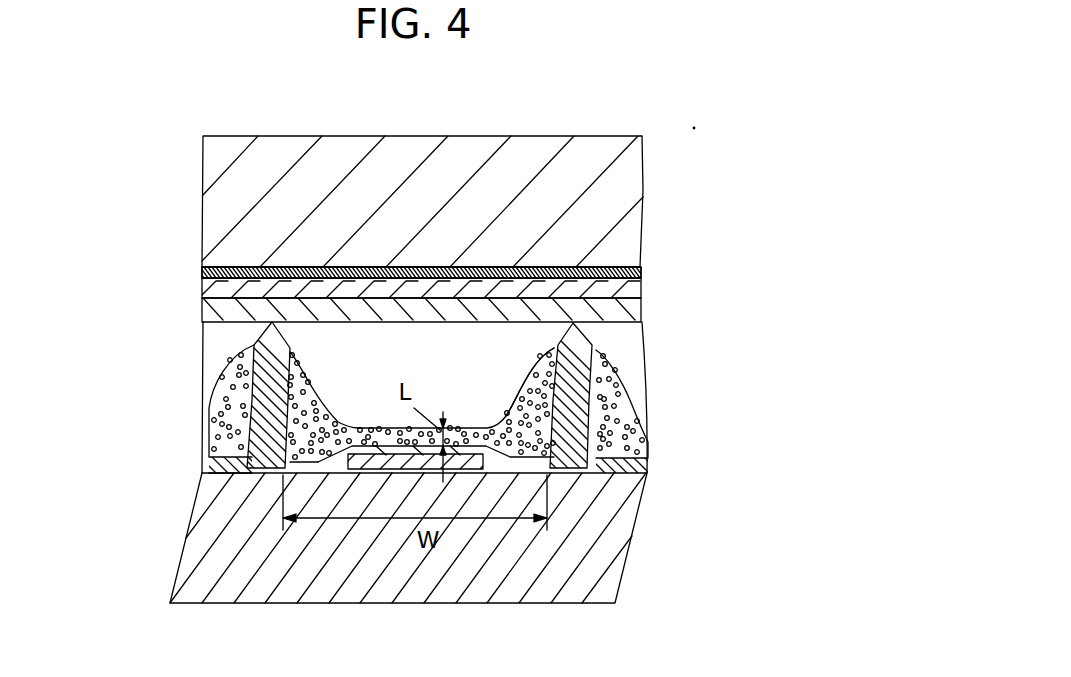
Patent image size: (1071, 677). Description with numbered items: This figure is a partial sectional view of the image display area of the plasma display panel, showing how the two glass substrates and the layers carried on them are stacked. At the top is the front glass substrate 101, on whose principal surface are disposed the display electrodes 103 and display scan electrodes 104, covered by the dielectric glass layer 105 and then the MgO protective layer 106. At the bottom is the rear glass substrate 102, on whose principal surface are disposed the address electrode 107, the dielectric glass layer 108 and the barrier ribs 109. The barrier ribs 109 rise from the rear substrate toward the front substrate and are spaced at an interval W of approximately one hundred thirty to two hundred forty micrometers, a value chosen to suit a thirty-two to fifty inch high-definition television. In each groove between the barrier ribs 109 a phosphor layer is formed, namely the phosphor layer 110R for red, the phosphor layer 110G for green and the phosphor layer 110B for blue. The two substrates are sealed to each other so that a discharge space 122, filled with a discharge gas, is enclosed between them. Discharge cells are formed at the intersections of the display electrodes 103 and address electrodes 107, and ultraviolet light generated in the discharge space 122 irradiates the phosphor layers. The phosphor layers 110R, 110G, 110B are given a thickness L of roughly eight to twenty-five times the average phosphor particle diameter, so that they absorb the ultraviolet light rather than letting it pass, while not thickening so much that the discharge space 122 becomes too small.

The front glass substrate 101 is at (630, 195).
The rear glass substrate 102 is at (622, 532).
The display electrodes 103 is at (642, 272).
The display scan electrodes 104 is at (642, 272).
The dielectric glass layer 105 is at (642, 293).
The MgO protective layer 106 is at (643, 312).
The address electrode 107 is at (350, 465).
The dielectric glass layer 108 is at (300, 422).
The barrier ribs 109 is at (566, 333).
The phosphor layer for red 110R is at (210, 407).
The phosphor layer for green 110G is at (508, 430).
The phosphor layer for blue 110B is at (637, 432).
The discharge space 122 is at (508, 370).